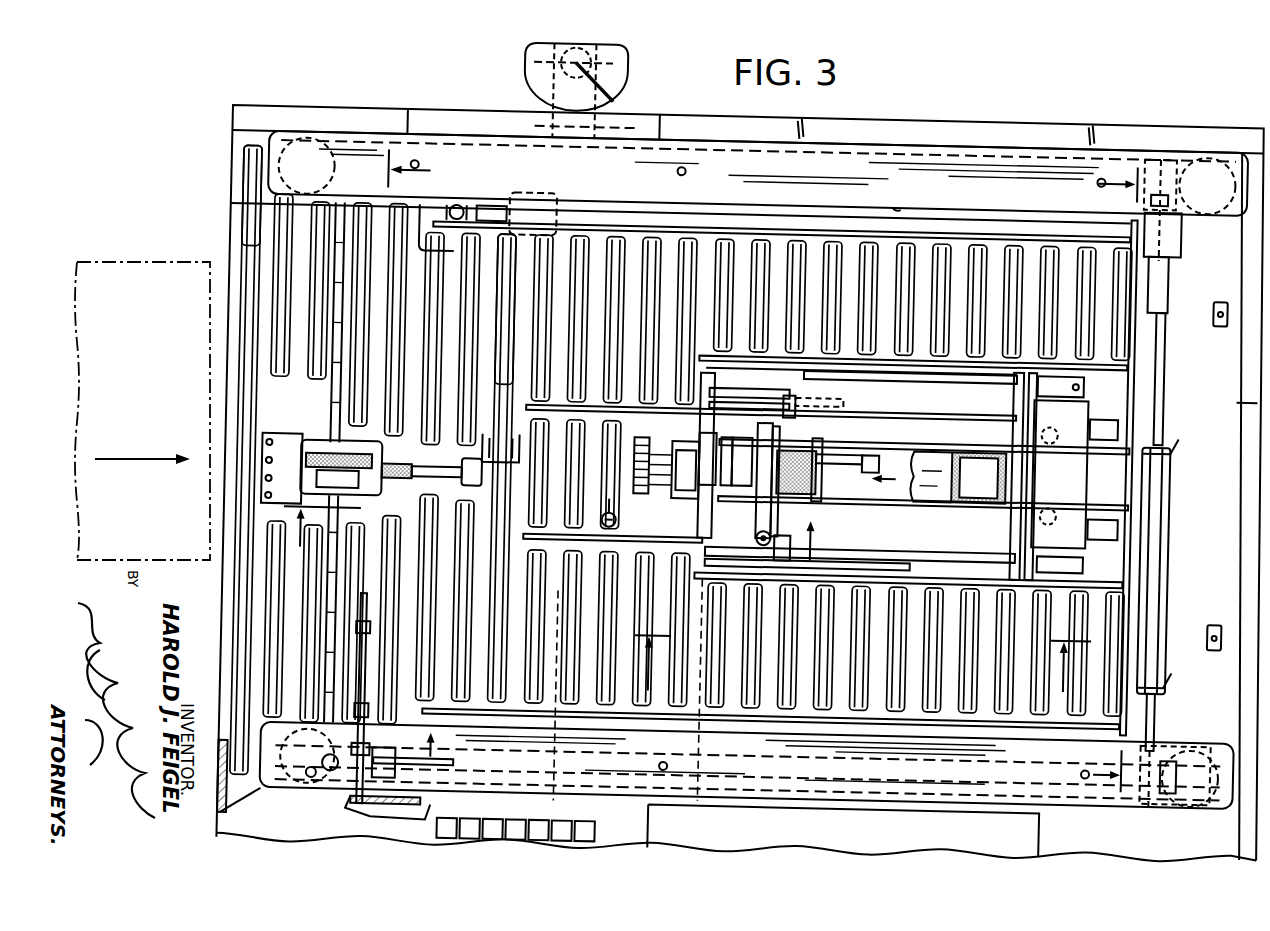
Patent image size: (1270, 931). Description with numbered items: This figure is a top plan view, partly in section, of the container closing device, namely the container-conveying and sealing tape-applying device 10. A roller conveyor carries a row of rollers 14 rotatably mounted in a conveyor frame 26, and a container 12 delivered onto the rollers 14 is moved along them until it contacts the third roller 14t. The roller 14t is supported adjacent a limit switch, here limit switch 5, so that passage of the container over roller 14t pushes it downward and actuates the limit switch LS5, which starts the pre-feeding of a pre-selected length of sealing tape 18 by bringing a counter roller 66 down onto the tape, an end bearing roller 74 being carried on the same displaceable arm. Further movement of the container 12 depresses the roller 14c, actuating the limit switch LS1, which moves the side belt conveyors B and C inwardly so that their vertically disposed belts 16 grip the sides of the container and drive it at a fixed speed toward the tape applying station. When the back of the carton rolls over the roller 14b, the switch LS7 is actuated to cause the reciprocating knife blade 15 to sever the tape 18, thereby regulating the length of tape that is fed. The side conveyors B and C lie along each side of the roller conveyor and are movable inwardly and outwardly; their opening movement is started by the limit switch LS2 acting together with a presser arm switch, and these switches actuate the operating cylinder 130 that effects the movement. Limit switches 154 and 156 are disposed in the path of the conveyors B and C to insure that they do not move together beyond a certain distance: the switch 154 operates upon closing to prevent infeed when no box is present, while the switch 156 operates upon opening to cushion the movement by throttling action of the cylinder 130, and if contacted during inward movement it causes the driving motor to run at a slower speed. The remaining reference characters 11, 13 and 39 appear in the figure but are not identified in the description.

The side belt conveyor B is at (912, 117).
The side belt conveyor C is at (1076, 802).
The limit switch 5 is at (862, 668).
The container-conveying and sealing tape-applying device 10 is at (423, 454).
The section line 11- 11 is at (1131, 476).
The container 12 is at (132, 266).
The section line 13- 13 is at (564, 546).
The rollers 14 is at (260, 198).
The roller 14b is at (645, 428).
The roller 14c is at (505, 365).
The third roller 14t is at (323, 597).
The reciprocating knife blade 15 is at (758, 504).
The belt 16 is at (898, 196).
The sealing tape 18 is at (937, 454).
The conveyor frame 26 is at (1269, 387).
The gear box 39 is at (642, 455).
The counter roller 66 is at (808, 437).
The end bearing roller 74 is at (876, 459).
The operating cylinder 130 is at (1178, 478).
The limit switch 154 is at (1226, 280).
The limit switch 156 is at (1227, 603).
The limit switch LS1 is at (483, 440).
The limit switch LS2 is at (1125, 360).
The limit switch LS5 is at (318, 782).
The switch LS7 is at (628, 513).